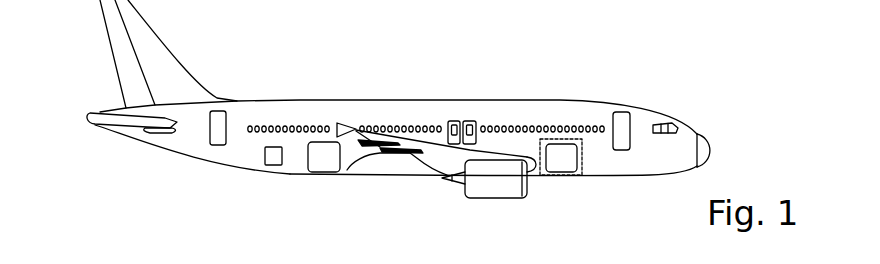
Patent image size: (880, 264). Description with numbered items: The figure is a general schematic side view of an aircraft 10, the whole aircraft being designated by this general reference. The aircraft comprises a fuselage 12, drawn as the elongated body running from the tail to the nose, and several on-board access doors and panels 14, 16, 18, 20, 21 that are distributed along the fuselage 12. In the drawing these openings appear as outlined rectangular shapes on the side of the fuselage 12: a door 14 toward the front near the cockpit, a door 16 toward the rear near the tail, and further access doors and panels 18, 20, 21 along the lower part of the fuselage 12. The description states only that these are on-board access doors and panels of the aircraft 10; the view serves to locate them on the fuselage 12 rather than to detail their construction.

The aircraft 10 is at (398, 114).
The fuselage 12 is at (534, 101).
The on-board access door 14 is at (622, 109).
The on-board access door 16 is at (227, 116).
The on-board access panel 18 is at (273, 162).
The on-board access door 20 is at (327, 160).
The on-board access door 21 is at (565, 167).